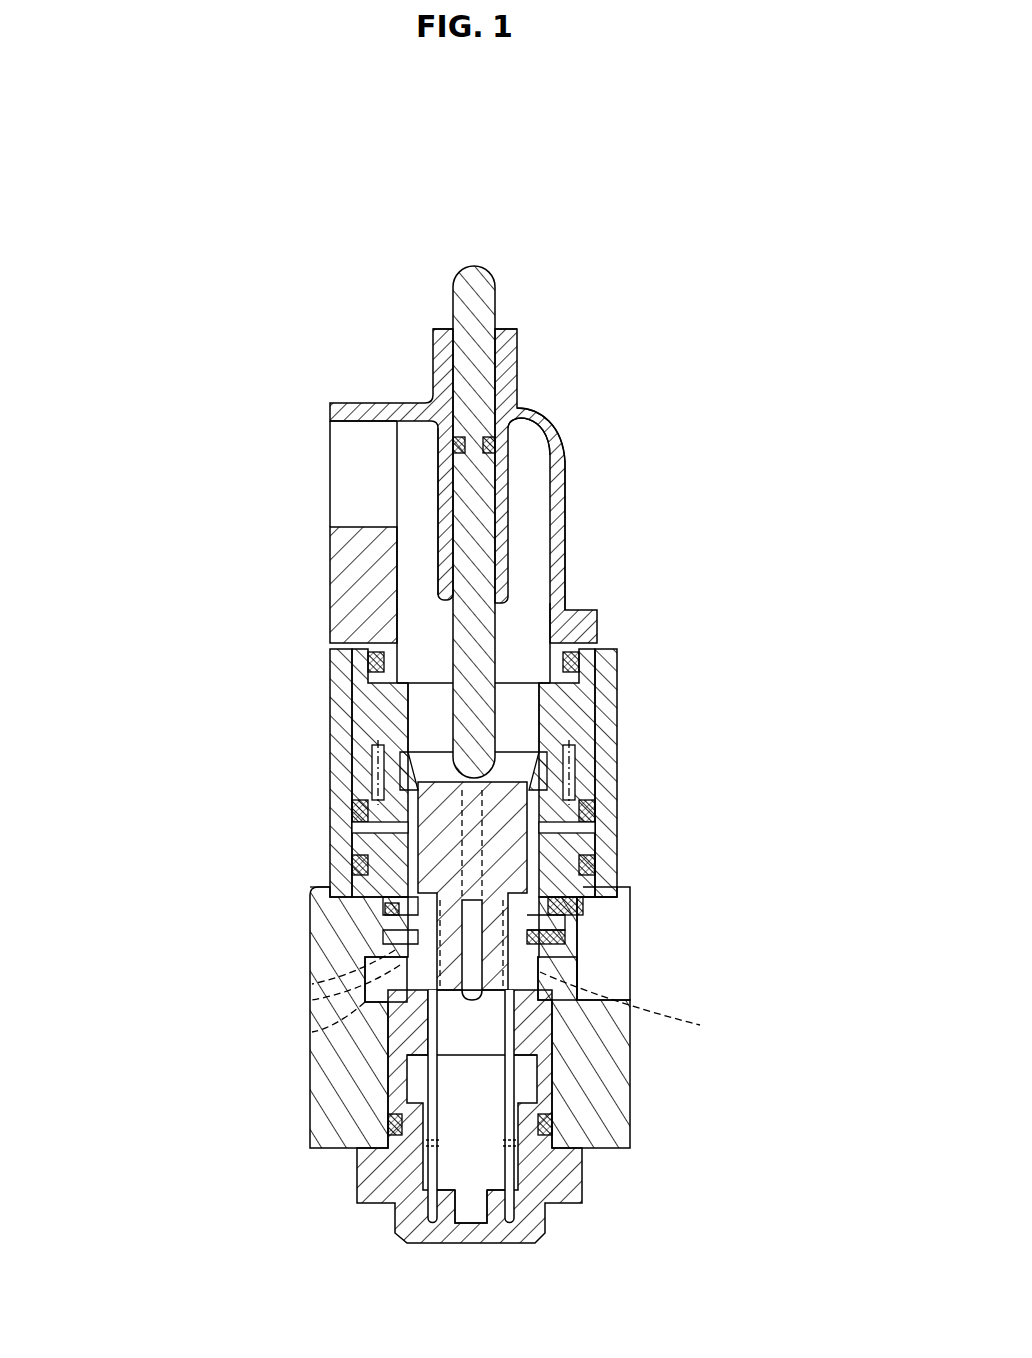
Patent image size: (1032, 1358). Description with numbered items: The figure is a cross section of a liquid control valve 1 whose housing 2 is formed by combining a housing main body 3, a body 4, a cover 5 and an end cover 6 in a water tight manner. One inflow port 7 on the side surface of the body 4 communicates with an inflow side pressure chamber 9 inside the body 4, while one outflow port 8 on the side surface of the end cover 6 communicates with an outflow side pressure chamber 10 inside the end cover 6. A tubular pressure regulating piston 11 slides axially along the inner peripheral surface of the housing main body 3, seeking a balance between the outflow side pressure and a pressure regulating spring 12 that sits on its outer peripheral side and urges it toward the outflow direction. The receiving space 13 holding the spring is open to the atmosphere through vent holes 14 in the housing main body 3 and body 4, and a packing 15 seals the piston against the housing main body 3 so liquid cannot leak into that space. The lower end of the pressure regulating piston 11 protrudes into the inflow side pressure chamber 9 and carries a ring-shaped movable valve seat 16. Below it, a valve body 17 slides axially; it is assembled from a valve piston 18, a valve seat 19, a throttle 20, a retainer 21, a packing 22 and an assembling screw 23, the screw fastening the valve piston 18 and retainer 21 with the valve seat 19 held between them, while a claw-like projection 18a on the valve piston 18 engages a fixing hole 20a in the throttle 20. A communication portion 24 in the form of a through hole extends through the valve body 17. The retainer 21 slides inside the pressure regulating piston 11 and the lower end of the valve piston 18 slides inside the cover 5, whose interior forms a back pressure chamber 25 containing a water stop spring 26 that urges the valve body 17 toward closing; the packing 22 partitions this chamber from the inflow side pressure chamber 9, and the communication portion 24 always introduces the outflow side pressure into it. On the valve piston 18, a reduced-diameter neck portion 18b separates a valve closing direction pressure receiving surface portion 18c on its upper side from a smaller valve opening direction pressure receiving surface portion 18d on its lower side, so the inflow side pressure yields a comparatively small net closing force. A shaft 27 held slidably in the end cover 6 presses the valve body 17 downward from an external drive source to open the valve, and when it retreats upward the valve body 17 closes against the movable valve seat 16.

The liquid control valve 1 is at (567, 373).
The housing 2 is at (336, 406).
The housing main body 3 is at (363, 737).
The body 4 is at (322, 1128).
The cover 5 is at (405, 1212).
The end cover 6 is at (440, 377).
The inflow port 7 is at (603, 974).
The outflow port 8 is at (348, 490).
The inflow side pressure chamber 9 is at (345, 1097).
The outflow side pressure chamber 10 is at (530, 503).
The pressure regulating piston 11 is at (543, 760).
The pressure regulating spring 12 is at (557, 777).
The receiving space 13 is at (377, 767).
The vent holes 14 is at (330, 828).
The packing 15 is at (352, 735).
The movable valve seat 16 is at (603, 900).
The valve body 17 is at (562, 943).
The valve piston 18 is at (577, 1008).
The claw-like projection 18a is at (400, 935).
The neck portion 18b is at (395, 995).
The valve closing direction pressure receiving surface portion 18c is at (405, 968).
The valve opening direction pressure receiving surface portion 18d is at (400, 975).
The valve seat 19 is at (560, 928).
The throttle 20 is at (333, 868).
The fixing hole 20a is at (385, 910).
The retainer 21 is at (587, 882).
The packing 22 is at (598, 1092).
The assembling screw 23 is at (355, 1187).
The communication portion 24 is at (612, 1010).
The back pressure chamber 25 is at (485, 1162).
The water stop spring 26 is at (510, 1138).
The shaft 27 is at (482, 645).